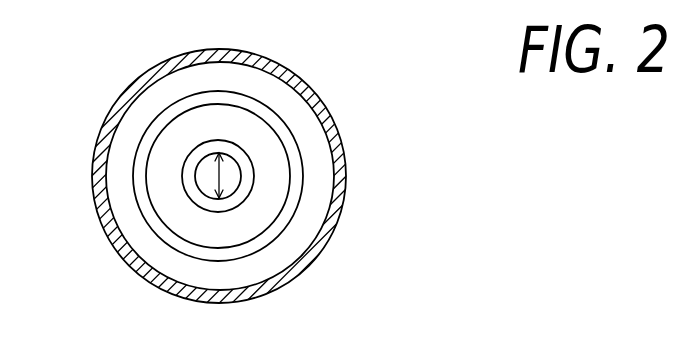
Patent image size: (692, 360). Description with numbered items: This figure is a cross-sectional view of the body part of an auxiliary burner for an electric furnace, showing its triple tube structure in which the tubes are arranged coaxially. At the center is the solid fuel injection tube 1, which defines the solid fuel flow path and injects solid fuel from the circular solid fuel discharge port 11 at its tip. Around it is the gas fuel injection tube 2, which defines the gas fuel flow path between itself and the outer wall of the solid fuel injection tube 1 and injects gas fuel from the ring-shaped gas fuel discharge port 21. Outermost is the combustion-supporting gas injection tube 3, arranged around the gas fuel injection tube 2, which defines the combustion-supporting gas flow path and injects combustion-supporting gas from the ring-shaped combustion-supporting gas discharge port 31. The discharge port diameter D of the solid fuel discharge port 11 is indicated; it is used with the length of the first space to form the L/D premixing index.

The solid fuel injection tube 1 is at (187, 152).
The solid fuel discharge port 11 is at (198, 178).
The gas fuel injection tube 2 is at (295, 140).
The gas fuel discharge port 21 is at (248, 232).
The combustion-supporting gas injection tube 3 is at (140, 275).
The combustion-supporting gas discharge port 31 is at (303, 232).
The discharge port diameter D is at (220, 172).